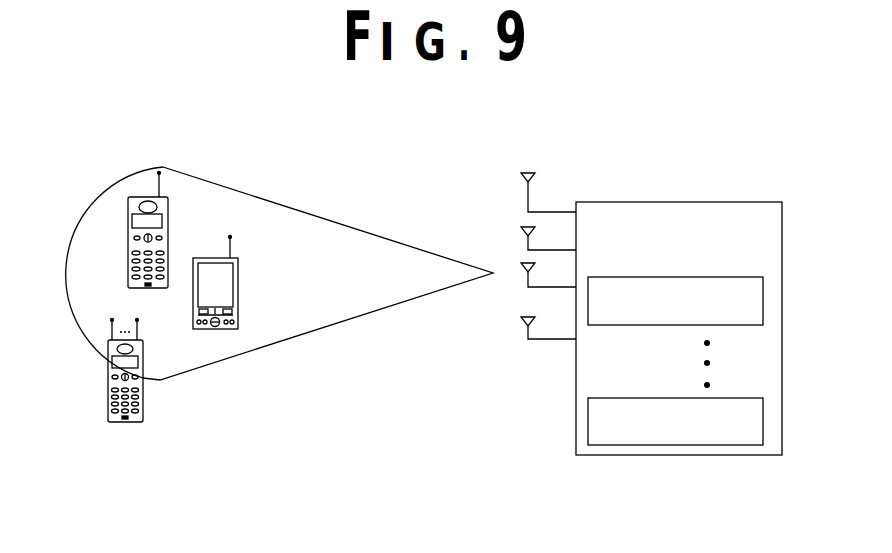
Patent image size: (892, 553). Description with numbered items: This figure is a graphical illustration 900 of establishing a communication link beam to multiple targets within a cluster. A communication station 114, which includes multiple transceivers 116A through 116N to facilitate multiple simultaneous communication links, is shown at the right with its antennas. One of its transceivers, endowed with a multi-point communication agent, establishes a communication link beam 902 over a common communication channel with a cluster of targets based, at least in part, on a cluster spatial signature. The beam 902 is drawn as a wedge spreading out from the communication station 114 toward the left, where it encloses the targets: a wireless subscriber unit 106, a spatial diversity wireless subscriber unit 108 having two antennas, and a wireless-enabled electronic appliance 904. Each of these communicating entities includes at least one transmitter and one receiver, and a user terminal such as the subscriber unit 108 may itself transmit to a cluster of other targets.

The wireless communication system 900 is at (698, 115).
The communication link beam 902 is at (275, 213).
The wireless subscriber unit 106 is at (138, 205).
The spatial diversity wireless subscriber unit 108 is at (133, 417).
The wireless-enabled electronic appliance 904 is at (238, 278).
The communication station 114 is at (720, 202).
The transceiver 116A is at (680, 325).
The transceiver 116N is at (680, 398).